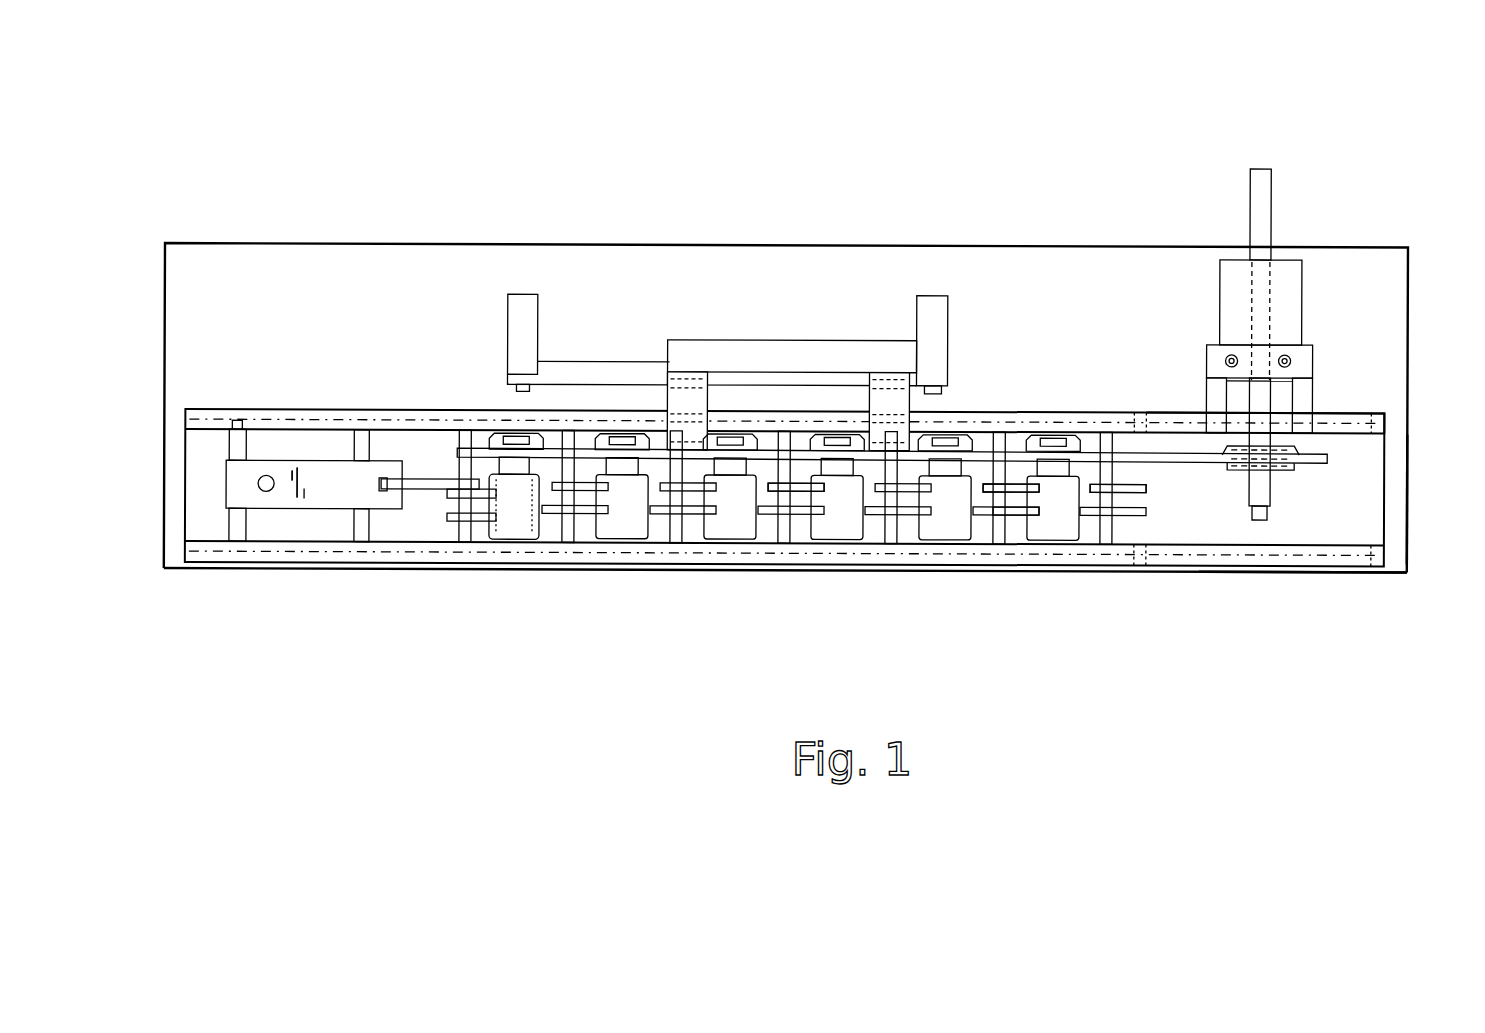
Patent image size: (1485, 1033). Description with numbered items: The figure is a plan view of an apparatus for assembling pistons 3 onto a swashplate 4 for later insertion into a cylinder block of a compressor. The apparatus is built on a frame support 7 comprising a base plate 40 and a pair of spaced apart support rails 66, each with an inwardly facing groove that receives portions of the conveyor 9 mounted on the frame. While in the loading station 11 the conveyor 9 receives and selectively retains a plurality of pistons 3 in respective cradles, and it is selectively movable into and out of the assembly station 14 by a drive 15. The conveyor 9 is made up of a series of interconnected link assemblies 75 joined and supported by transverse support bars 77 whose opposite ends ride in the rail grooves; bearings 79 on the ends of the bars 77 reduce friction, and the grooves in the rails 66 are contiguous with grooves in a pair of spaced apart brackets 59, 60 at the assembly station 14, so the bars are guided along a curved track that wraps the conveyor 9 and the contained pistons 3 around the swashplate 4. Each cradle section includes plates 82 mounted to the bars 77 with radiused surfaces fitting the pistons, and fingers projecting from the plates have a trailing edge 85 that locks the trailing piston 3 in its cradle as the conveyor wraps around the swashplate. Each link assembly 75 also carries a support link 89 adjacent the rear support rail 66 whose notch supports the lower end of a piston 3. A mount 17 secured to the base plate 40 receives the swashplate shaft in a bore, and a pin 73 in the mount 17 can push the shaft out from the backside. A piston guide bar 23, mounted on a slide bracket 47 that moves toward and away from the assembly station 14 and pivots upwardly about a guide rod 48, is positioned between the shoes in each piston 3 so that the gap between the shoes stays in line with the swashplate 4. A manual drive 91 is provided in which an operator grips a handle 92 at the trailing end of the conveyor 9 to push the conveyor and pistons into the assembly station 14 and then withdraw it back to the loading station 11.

The pistons 3 is at (733, 525).
The swashplate 4 is at (1339, 451).
The frame support 7 is at (1410, 556).
The conveyor 9 is at (668, 528).
The loading station 11 is at (615, 576).
The assembly station 14 is at (822, 422).
The drive 15 is at (323, 518).
The mount 17 is at (1303, 285).
The piston guide bar 23 is at (1162, 451).
The base plate 40 is at (1410, 287).
The slide bracket 47 is at (950, 302).
The guide rod 48 is at (578, 350).
The bracket 59 is at (1362, 570).
The bracket 60 is at (1376, 411).
The support rails 66 is at (318, 408).
The pin 73 is at (1271, 178).
The link assemblies 75 is at (802, 521).
The transverse support bars 77 is at (232, 443).
The bearings 79 is at (1020, 518).
The plates 82 is at (993, 512).
The trailing edge 85 is at (799, 485).
The support link 89 is at (1009, 445).
The drive 91 is at (272, 448).
The handle 92 is at (267, 493).